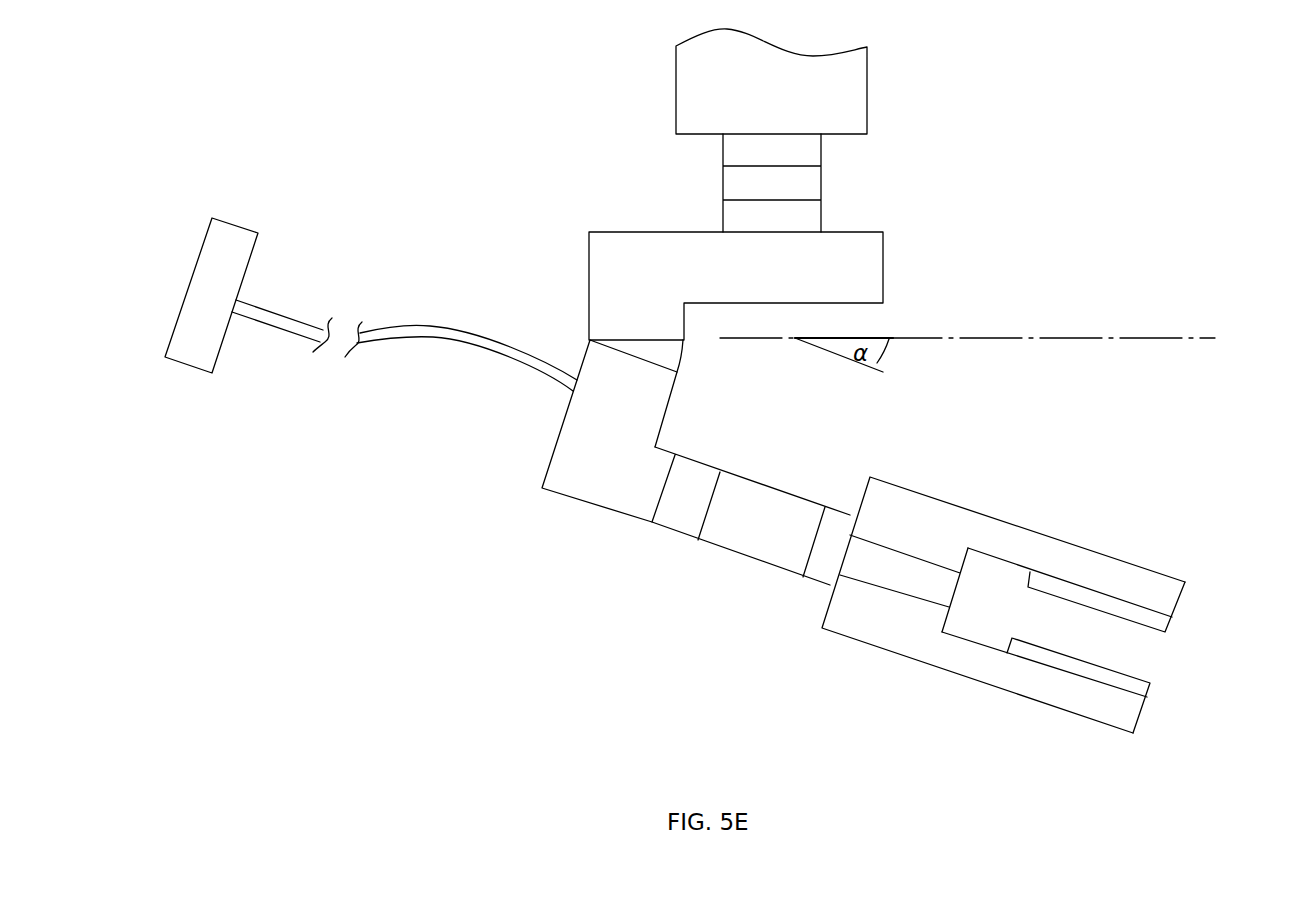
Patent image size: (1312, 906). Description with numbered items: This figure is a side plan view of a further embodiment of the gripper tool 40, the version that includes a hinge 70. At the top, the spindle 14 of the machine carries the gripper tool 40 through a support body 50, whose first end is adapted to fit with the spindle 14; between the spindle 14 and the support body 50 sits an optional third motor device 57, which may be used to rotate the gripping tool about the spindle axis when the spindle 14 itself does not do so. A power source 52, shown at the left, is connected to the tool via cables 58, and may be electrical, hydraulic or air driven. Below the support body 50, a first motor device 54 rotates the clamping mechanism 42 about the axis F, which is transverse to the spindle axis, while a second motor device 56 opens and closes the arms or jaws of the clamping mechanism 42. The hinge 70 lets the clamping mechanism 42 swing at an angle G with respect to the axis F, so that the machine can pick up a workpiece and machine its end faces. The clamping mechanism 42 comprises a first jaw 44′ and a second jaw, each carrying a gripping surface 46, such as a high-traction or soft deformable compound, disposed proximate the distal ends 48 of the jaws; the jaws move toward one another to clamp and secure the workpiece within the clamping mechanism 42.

The spindle 14 is at (867, 90).
The third motor device 57 is at (821, 183).
The power source 52 is at (183, 367).
The support body 50 is at (563, 326).
The gripper tool 40 is at (997, 184).
The cables 58 is at (433, 340).
The first motor device 54 is at (677, 538).
The hinge 70 is at (700, 359).
The second motor device 56 is at (837, 510).
The axis F is at (1080, 338).
The angle G is at (903, 362).
The clamping mechanism 42 is at (1119, 470).
The first arm or jaw 44′ is at (1163, 575).
The gripping surface 46 is at (1173, 620).
The distal ends 48 is at (1198, 601).